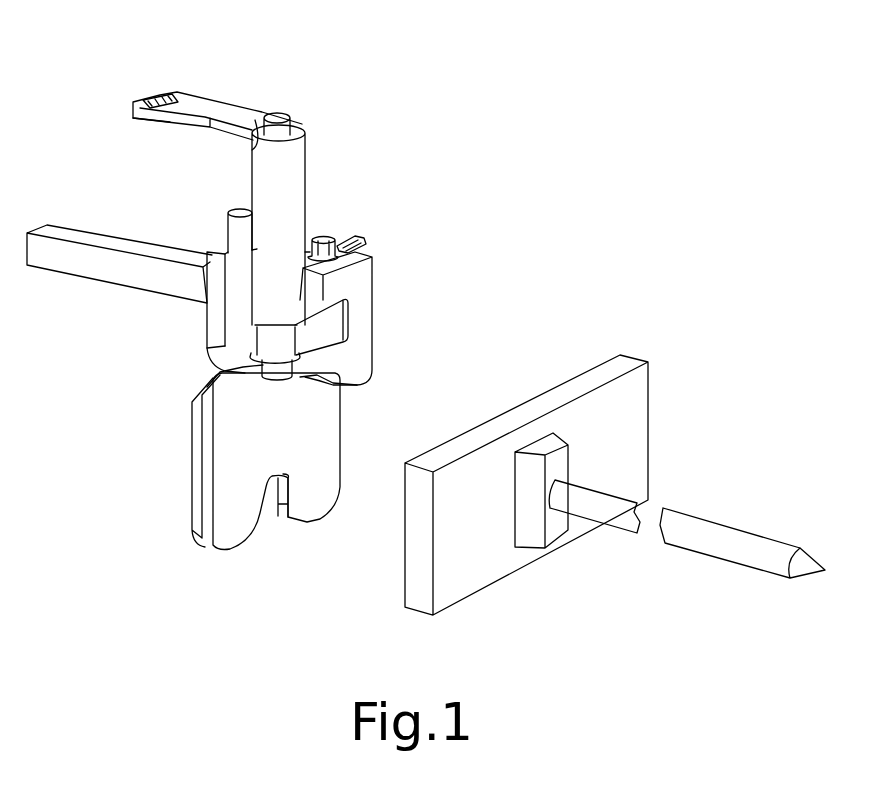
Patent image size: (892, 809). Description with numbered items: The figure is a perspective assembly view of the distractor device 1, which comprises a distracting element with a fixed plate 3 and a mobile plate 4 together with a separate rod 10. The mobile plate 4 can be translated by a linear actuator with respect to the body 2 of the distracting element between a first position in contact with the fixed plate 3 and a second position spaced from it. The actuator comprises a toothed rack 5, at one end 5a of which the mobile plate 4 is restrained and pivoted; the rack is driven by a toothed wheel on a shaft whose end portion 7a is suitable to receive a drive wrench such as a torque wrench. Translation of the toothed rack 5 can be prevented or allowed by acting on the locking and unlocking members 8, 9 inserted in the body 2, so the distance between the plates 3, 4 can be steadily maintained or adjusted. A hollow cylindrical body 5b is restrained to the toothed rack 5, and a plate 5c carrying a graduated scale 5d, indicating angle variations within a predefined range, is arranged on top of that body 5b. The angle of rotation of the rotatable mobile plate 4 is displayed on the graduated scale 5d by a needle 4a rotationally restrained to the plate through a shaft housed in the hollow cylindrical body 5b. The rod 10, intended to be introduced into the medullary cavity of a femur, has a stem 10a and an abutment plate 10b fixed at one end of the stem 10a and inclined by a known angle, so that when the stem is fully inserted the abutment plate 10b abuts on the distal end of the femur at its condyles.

The distractor device 1 is at (534, 222).
The body 2 is at (360, 283).
The fixed plate 3 is at (193, 438).
The mobile plate 4 is at (330, 435).
The needle 4a is at (192, 95).
The toothed rack 5 is at (73, 232).
The end of the toothed rack 5a is at (337, 328).
The hollow cylindrical body 5b is at (297, 163).
The plate 5c is at (168, 123).
The graduated scale 5d is at (146, 98).
The end portion of the shaft 7a is at (327, 237).
The locking member 8 is at (363, 247).
The unlocking member 9 is at (231, 209).
The rod 10 is at (690, 499).
The stem 10a is at (737, 549).
The abutment plate 10b is at (630, 356).